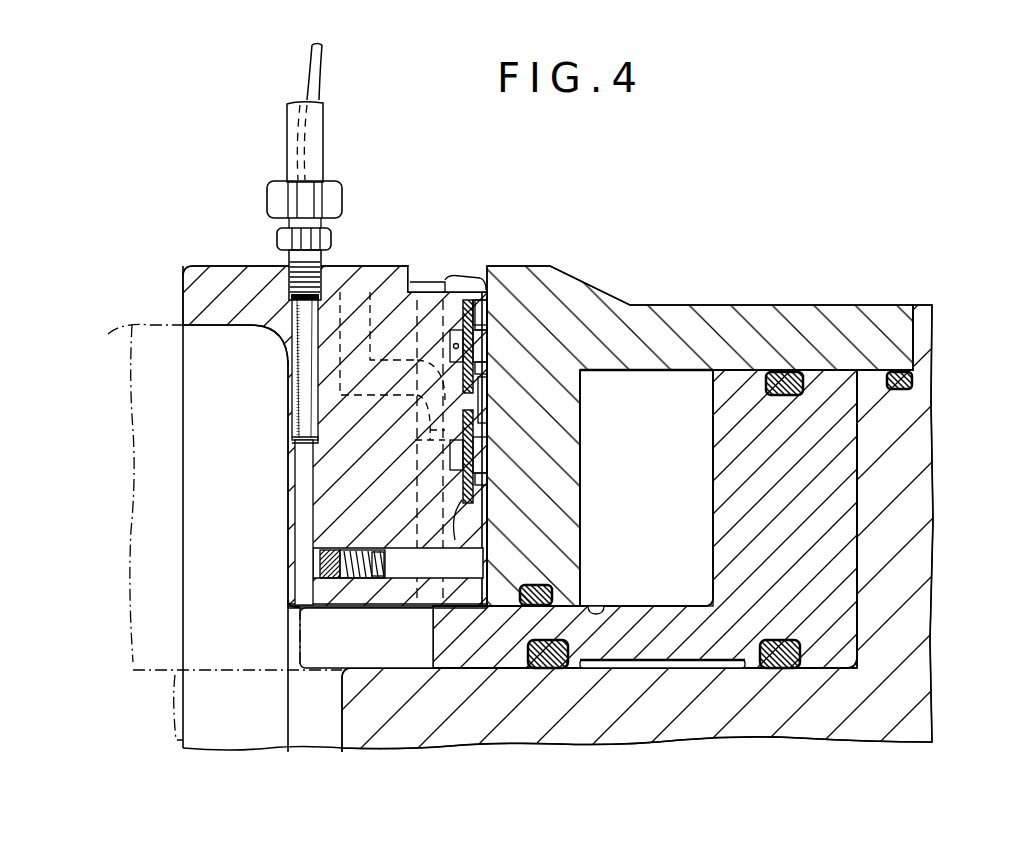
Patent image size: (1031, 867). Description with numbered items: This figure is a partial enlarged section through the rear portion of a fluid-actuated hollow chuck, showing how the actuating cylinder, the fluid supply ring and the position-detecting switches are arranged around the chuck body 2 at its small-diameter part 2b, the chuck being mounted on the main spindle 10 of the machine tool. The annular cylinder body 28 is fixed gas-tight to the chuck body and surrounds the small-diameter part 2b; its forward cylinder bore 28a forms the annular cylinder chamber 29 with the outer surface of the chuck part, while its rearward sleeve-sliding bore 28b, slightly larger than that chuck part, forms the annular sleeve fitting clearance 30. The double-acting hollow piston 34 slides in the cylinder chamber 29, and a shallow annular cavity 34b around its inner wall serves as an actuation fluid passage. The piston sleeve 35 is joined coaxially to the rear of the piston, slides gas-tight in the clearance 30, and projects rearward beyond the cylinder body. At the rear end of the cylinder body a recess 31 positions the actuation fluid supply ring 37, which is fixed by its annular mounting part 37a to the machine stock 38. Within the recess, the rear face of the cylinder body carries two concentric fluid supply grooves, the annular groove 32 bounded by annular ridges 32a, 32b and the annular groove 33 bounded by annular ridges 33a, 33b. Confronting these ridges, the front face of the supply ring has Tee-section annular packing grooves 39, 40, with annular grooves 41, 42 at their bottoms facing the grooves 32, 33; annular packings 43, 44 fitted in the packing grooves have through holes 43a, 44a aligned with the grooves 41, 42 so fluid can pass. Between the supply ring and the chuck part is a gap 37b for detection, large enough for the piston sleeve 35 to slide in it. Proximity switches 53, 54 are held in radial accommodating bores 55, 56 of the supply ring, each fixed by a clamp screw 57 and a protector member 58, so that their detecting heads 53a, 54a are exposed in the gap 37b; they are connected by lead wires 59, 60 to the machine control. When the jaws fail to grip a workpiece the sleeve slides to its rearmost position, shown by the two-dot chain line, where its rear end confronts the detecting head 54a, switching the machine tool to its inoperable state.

The chuck body 2 is at (932, 667).
The small-diameter part 2b is at (606, 722).
The main spindle 10 is at (176, 742).
The annular cylinder body 28 is at (565, 300).
The cylinder bore 28a is at (665, 375).
The sleeve-sliding bore 28b is at (604, 607).
The annular cylinder chamber 29 is at (637, 446).
The annular sleeve fitting clearance 30 is at (512, 650).
The recess 31 is at (455, 290).
The annular groove 32 is at (484, 342).
The annular ridge 32a is at (500, 300).
The annular ridge 32b is at (482, 380).
The annular groove 33 is at (486, 452).
The annular ridge 33a is at (484, 422).
The annular ridge 33b is at (484, 480).
The hollow piston 34 is at (740, 458).
The annular cavity 34b is at (686, 668).
The piston sleeve 35 is at (478, 645).
The actuation fluid supply ring 37 is at (332, 278).
The annular mounting part 37a is at (192, 300).
The gap for detection 37b is at (332, 655).
The machine stock 38 is at (206, 494).
The annular packing groove 39 is at (470, 286).
The annular packing groove 40 is at (488, 542).
The annular groove 41 is at (422, 342).
The annular groove 42 is at (420, 482).
The annular packing 43 is at (448, 296).
The through holes 43a is at (487, 318).
The annular packing 44 is at (466, 495).
The through holes 44a is at (420, 500).
The proximity switch 53 is at (410, 443).
The detecting head 53a is at (422, 608).
The proximity switch 54 is at (312, 468).
The detecting head 54a is at (286, 604).
The accommodating bore 55 is at (412, 426).
The accommodating bore 56 is at (292, 312).
The clamp screw 57 is at (355, 580).
The protector member 58 is at (330, 580).
The lead wire 59 is at (370, 268).
The lead wire 60 is at (300, 372).